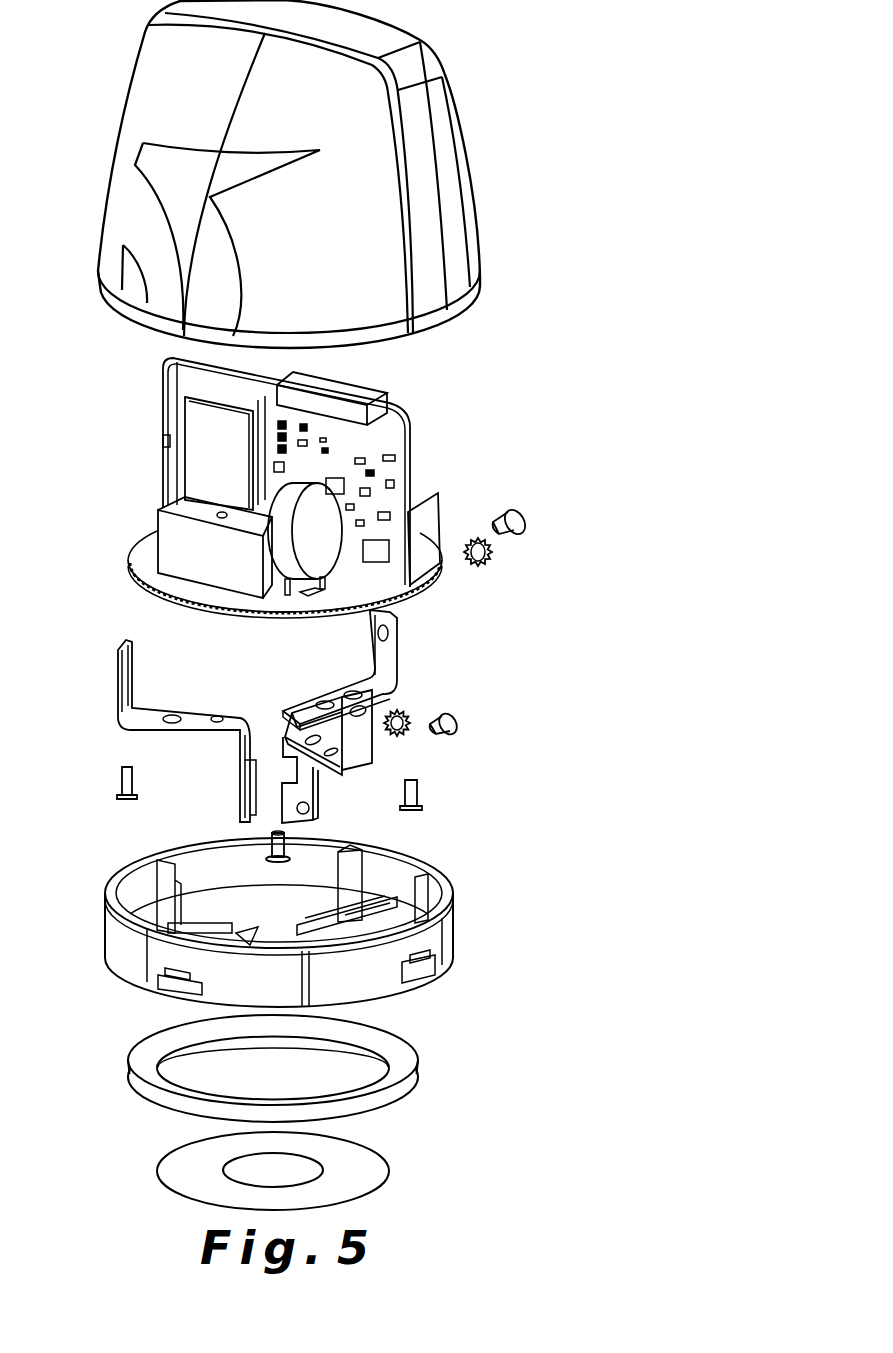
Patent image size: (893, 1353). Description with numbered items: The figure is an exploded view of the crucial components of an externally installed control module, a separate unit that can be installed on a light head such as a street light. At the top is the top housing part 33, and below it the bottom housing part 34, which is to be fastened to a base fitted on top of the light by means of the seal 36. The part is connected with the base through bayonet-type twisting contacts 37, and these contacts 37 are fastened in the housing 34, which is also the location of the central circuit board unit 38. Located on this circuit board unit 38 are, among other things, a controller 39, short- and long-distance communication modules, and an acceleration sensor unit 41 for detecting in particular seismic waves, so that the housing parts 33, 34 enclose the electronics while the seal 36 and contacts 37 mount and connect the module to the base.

The top housing part 33 is at (443, 122).
The bottom housing part 34 is at (398, 887).
The seal 36 is at (407, 1070).
The bayonet-type twisting contacts 37 is at (116, 687).
The central circuit board unit 38 is at (142, 410).
The controller 39 is at (219, 453).
The acceleration sensor unit 41 is at (378, 397).